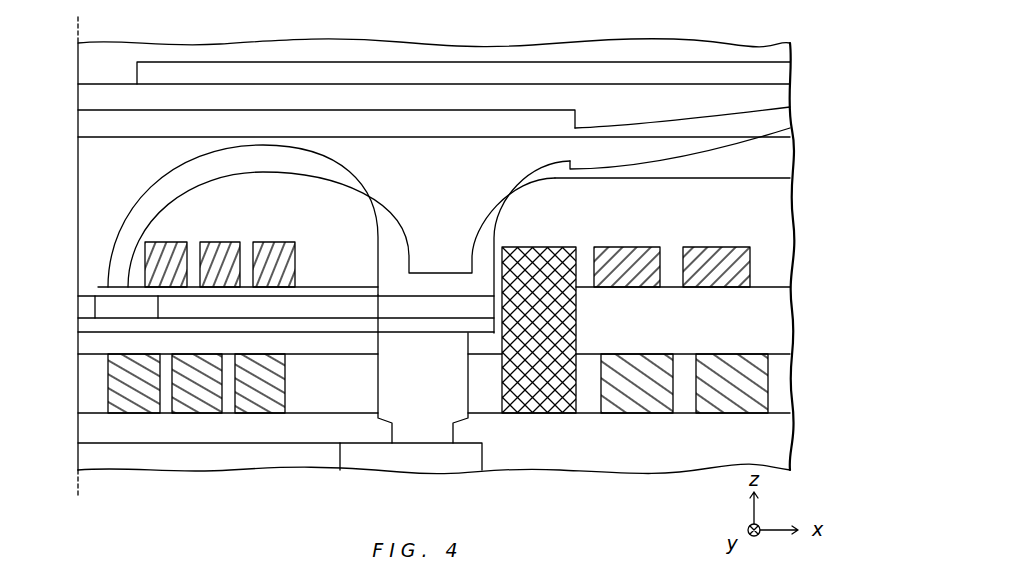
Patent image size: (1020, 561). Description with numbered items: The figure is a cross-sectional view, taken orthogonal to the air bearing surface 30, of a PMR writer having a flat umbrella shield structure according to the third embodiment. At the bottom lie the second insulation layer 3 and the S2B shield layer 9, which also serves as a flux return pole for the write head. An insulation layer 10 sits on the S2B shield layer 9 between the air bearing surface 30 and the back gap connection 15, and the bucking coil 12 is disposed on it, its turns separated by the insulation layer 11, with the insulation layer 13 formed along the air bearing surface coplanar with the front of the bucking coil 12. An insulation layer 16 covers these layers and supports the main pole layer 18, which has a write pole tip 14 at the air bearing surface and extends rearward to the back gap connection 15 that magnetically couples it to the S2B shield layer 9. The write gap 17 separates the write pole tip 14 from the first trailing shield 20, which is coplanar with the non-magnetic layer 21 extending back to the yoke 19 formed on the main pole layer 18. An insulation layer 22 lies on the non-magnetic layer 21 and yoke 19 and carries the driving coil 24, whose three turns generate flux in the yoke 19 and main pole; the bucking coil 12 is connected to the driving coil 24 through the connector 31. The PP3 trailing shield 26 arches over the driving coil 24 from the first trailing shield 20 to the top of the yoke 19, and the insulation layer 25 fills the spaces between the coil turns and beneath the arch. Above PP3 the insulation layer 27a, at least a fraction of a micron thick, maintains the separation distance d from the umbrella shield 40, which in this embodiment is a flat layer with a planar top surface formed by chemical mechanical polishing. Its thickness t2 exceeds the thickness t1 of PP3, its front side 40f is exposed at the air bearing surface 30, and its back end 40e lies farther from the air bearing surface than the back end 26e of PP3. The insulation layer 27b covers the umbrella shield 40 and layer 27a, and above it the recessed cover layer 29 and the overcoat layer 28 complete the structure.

The second insulation layer 3 is at (775, 448).
The second top shield (S2B) layer 9 is at (85, 457).
The insulation layer 10 is at (85, 430).
The insulation layer 11 is at (167, 396).
The bucking coil 12 is at (257, 373).
The insulation layer 13 is at (122, 362).
The write pole tip 14 is at (85, 323).
The back gap connection 15 is at (435, 430).
The insulation layer 16 is at (85, 346).
The write gap 17 is at (95, 312).
The main pole layer 18 is at (322, 322).
The yoke 19 is at (358, 312).
The first write shield layer 20 is at (108, 303).
The non-magnetic layer 21 is at (96, 296).
The insulation layer 22 is at (122, 288).
The driving coil 24 is at (235, 257).
The insulation layer 25 is at (135, 266).
The PP3 trailing shield layer 26 is at (155, 208).
The back end of PP3 26e is at (790, 132).
The insulation layer 27a is at (775, 157).
The insulation layer 27b is at (85, 96).
The overcoat layer 28 is at (90, 70).
The cover layer 29 is at (775, 72).
The air bearing surface 30 is at (78, 17).
The connector 31 is at (553, 252).
The umbrella shield 40 is at (85, 116).
The back end of umbrella shield 40e is at (790, 111).
The front side of umbrella shield 40f is at (78, 137).
The thickness of PP3 t1 is at (275, 170).
The thickness of umbrella shield t2 is at (316, 136).
The separation distance d is at (183, 143).